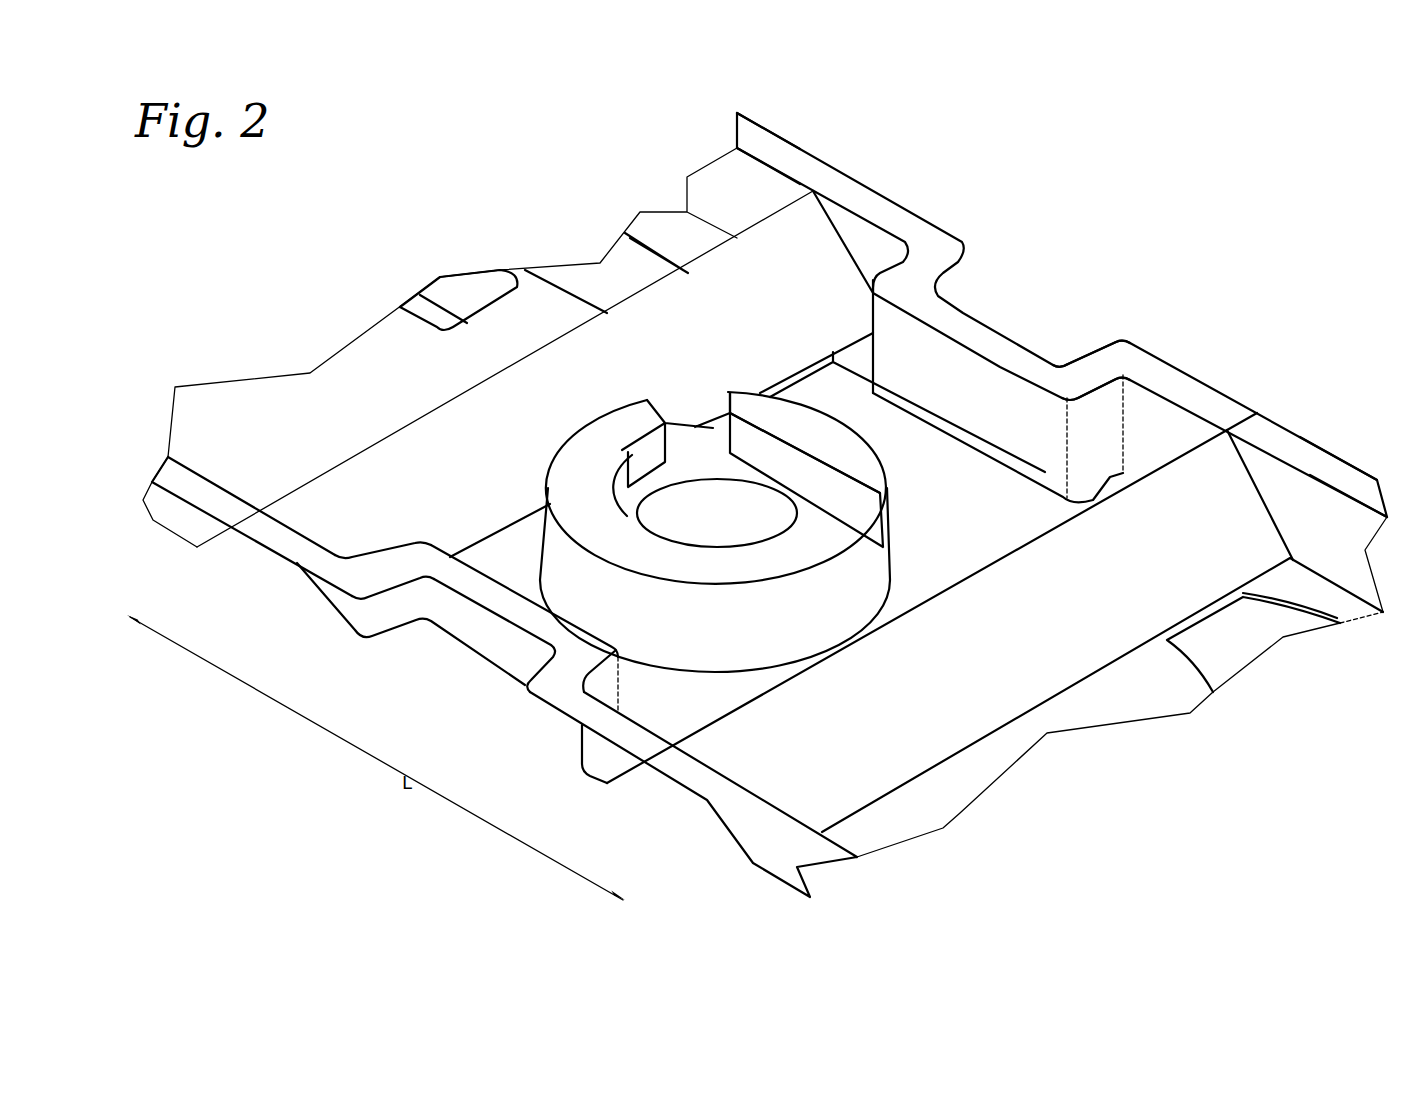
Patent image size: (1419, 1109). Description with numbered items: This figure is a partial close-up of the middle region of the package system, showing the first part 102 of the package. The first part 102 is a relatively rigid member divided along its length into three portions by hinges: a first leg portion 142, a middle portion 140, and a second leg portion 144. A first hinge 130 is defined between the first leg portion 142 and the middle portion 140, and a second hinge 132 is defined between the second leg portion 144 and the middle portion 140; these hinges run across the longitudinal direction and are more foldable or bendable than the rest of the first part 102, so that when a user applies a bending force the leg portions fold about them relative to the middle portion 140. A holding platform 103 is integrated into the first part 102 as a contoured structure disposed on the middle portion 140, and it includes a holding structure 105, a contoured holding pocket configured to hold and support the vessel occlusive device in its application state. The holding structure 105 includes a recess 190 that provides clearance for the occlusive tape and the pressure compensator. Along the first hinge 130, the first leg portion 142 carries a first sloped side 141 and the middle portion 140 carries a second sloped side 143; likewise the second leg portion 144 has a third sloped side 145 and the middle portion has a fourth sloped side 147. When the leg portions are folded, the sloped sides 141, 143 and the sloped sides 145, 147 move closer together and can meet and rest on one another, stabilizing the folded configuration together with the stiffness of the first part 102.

The first part 102 is at (1140, 360).
The holding platform 103 is at (825, 435).
The holding structure 105 is at (830, 487).
The recess 190 is at (870, 570).
The middle portion 140 is at (913, 213).
The second leg portion 144 is at (778, 136).
The first leg portion 142 is at (1290, 433).
The second hinge 132 is at (780, 210).
The first hinge 130 is at (1173, 453).
The third sloped side 145 is at (217, 540).
The fourth sloped side 147 is at (327, 610).
The second sloped side 143 is at (627, 777).
The first sloped side 141 is at (737, 843).